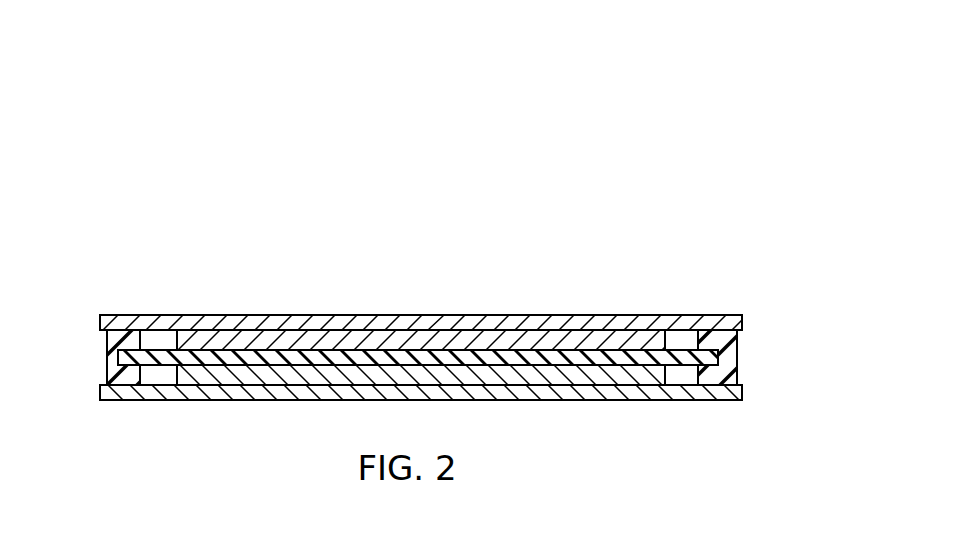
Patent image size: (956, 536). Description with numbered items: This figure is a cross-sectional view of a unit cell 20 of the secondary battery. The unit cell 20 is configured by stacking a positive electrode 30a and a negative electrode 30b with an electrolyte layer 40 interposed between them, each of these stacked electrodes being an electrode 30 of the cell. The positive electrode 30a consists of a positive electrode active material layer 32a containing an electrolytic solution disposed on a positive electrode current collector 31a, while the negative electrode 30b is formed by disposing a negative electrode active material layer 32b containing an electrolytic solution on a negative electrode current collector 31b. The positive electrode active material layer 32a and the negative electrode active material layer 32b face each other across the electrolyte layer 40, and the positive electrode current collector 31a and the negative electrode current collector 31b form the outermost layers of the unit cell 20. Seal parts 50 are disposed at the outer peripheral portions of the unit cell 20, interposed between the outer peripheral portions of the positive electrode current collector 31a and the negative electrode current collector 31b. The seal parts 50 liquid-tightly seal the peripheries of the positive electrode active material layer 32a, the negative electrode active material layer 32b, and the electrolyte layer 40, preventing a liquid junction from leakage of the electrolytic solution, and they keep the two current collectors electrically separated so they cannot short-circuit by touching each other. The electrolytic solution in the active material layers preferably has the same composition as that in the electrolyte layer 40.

The unit cell 20 is at (107, 138).
The electrode 30 is at (317, 179).
The positive electrode 30a is at (403, 220).
The negative electrode 30b is at (545, 220).
The positive electrode current collector 31a is at (333, 332).
The positive electrode active material layer 32a is at (388, 351).
The negative electrode active material layer 32b is at (475, 357).
The negative electrode current collector 31b is at (511, 381).
The electrolyte layer 40 is at (628, 348).
The seal part 50 is at (135, 330).